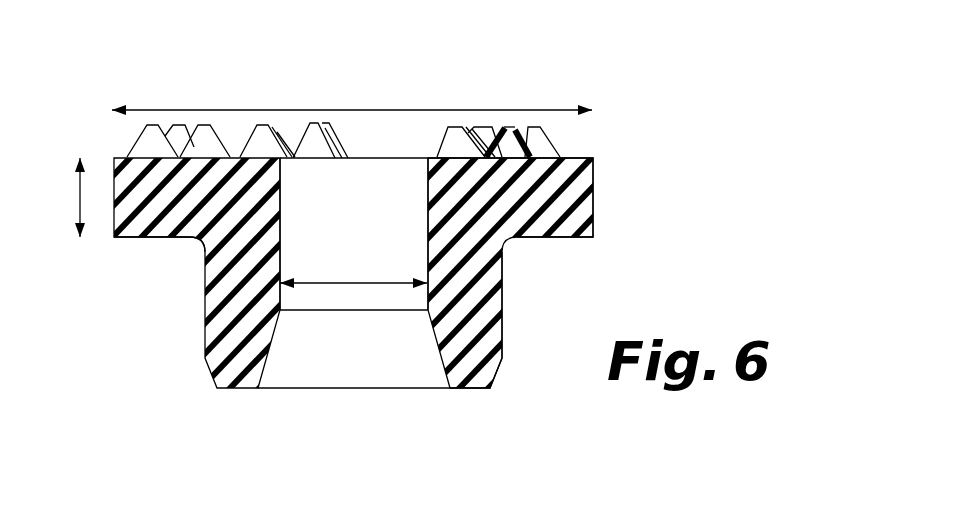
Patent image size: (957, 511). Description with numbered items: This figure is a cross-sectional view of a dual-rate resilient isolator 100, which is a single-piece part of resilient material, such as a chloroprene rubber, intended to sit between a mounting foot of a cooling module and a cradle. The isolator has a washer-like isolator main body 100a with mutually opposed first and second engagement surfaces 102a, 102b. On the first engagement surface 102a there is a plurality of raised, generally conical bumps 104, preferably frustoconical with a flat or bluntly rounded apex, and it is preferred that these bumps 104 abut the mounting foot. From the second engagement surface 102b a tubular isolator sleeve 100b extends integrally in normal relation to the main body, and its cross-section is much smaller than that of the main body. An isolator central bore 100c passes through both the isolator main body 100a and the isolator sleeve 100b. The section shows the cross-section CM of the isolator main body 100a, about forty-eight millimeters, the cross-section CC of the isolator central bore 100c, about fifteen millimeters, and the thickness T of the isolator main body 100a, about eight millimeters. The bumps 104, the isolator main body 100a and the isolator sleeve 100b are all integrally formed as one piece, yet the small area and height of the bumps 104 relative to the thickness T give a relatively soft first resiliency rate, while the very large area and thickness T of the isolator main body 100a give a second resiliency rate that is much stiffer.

The dual-rate resilient isolator 100 is at (636, 138).
The isolator main body 100a is at (594, 193).
The isolator sleeve 100b is at (503, 300).
The isolator central bore 100c is at (282, 260).
The first engagement surface 102a is at (443, 158).
The second engagement surface 102b is at (163, 239).
The bumps 104 is at (148, 125).
The cross-section of the isolator main body CM is at (311, 110).
The cross-section of the isolator central bore CC is at (368, 283).
The thickness of the isolator main body T is at (78, 197).